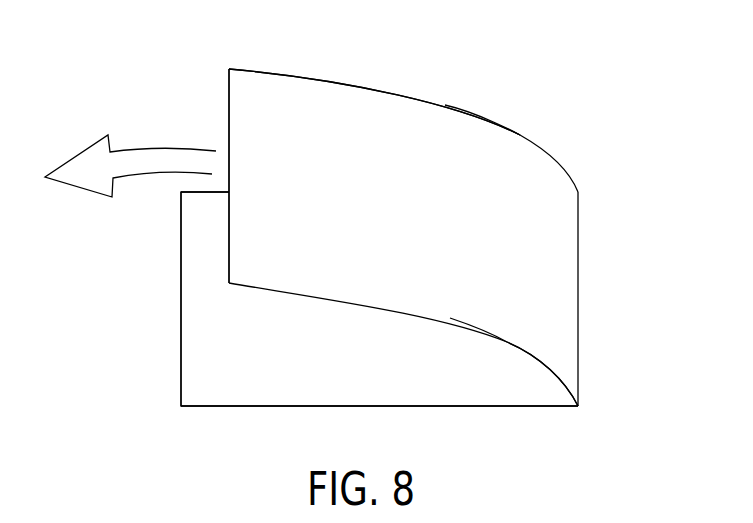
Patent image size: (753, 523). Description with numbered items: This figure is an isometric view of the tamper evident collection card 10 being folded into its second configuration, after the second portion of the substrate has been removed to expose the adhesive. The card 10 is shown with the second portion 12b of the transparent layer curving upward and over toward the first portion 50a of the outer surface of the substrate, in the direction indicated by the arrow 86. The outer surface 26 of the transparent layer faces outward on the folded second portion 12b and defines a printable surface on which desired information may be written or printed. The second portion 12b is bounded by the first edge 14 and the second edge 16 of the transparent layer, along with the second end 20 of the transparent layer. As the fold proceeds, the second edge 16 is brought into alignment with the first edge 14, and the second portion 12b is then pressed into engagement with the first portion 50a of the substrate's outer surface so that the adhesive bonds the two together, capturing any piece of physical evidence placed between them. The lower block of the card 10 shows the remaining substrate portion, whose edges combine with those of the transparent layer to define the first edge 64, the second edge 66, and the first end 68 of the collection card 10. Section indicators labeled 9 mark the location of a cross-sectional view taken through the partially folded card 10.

The tamper evident collection card 10 is at (369, 239).
The second portion of transparent layer 12b is at (490, 113).
The first edge of transparent layer 14 is at (418, 97).
The second edge of transparent layer 16 is at (507, 342).
The second end of transparent layer 20 is at (228, 98).
The outer surface of transparent layer 26 is at (325, 118).
The first portion of outer surface of substrate 50a is at (200, 370).
The first edge of collection card 64 is at (203, 192).
The second edge of collection card 66 is at (247, 407).
The first end of collection card 68 is at (178, 331).
The arrow 86 is at (157, 158).
The section line 9- 9 is at (168, 313).